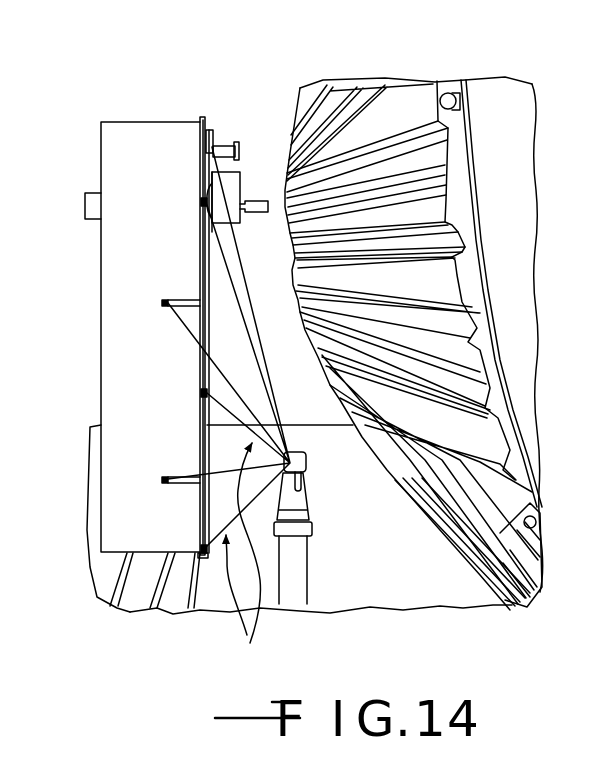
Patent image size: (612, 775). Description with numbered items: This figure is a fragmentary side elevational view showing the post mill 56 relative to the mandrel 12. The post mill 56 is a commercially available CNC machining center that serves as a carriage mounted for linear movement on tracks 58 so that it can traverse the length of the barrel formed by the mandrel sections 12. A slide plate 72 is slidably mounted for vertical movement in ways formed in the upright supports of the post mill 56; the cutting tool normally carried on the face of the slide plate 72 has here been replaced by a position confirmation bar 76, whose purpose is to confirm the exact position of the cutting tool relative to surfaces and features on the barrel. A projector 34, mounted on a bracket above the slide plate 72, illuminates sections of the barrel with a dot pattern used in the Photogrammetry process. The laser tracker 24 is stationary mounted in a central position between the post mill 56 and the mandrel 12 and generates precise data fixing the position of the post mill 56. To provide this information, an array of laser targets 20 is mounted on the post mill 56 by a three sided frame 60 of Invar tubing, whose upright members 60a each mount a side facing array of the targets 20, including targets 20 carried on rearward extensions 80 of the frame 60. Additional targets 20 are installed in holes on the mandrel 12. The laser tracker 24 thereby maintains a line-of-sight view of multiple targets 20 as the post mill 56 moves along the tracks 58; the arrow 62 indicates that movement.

The mandrel section 12 is at (478, 483).
The target 20 is at (202, 108).
The laser tracker 24 is at (295, 583).
The projector 34 is at (213, 143).
The post mill 56 is at (117, 135).
The tracks 58 is at (181, 602).
The three sided frame 60 is at (205, 125).
The upright member 60a is at (200, 505).
The direction of movement 62 is at (245, 556).
The slide plate 72 is at (205, 181).
The position confirmation bar 76 is at (263, 202).
The rearward extension 80 is at (190, 302).